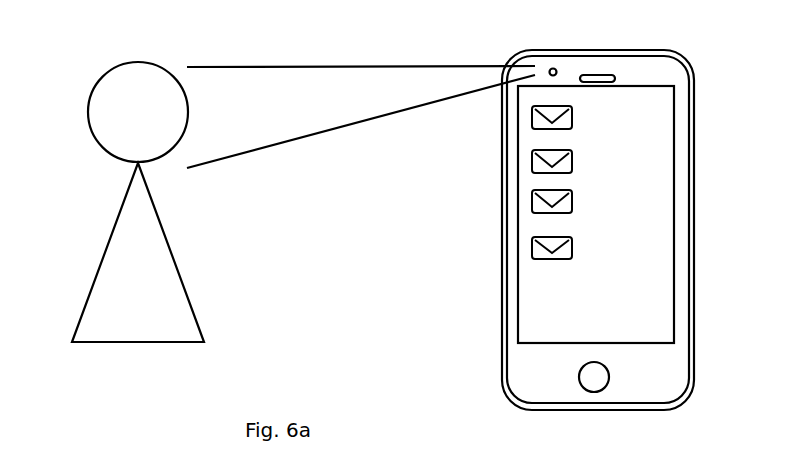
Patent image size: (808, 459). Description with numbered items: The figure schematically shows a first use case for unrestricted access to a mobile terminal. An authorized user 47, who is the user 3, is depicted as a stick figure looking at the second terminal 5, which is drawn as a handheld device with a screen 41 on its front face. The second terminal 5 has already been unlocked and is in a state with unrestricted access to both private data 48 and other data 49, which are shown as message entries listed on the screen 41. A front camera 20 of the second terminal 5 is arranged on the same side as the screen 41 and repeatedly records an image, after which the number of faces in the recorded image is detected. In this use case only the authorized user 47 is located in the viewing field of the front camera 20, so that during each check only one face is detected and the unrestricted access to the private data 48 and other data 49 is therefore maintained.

The user 3 is at (193, 305).
The authorized user 47 is at (201, 208).
The second terminal 5 is at (695, 86).
The camera / eye-tracking sensor 20 is at (557, 69).
The screen 41 is at (647, 322).
The other data 49 is at (667, 118).
The private data 48 is at (667, 258).